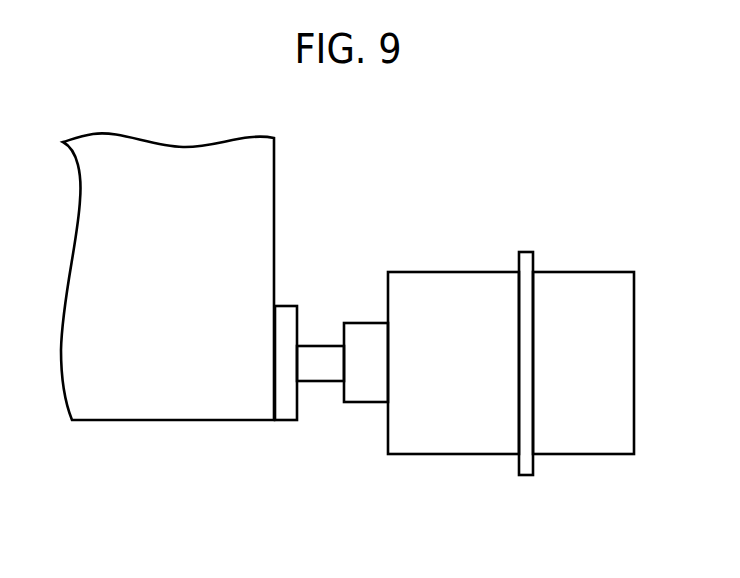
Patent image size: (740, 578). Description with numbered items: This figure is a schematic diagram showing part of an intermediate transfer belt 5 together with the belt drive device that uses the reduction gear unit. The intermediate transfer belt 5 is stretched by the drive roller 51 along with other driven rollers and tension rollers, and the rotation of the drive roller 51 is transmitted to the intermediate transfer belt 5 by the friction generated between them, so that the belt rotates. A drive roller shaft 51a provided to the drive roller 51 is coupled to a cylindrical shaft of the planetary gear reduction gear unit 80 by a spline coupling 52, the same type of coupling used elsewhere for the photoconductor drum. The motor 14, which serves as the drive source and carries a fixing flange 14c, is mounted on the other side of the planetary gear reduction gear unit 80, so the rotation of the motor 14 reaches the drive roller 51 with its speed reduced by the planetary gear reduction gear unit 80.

The intermediate transfer belt 5 is at (275, 178).
The drive roller 51 is at (284, 305).
The drive roller shaft 51a is at (323, 382).
The spline coupling 52 is at (372, 323).
The planetary gear reduction gear unit 80 is at (445, 460).
The motor 14 is at (587, 460).
The fixing flange 14c is at (525, 477).